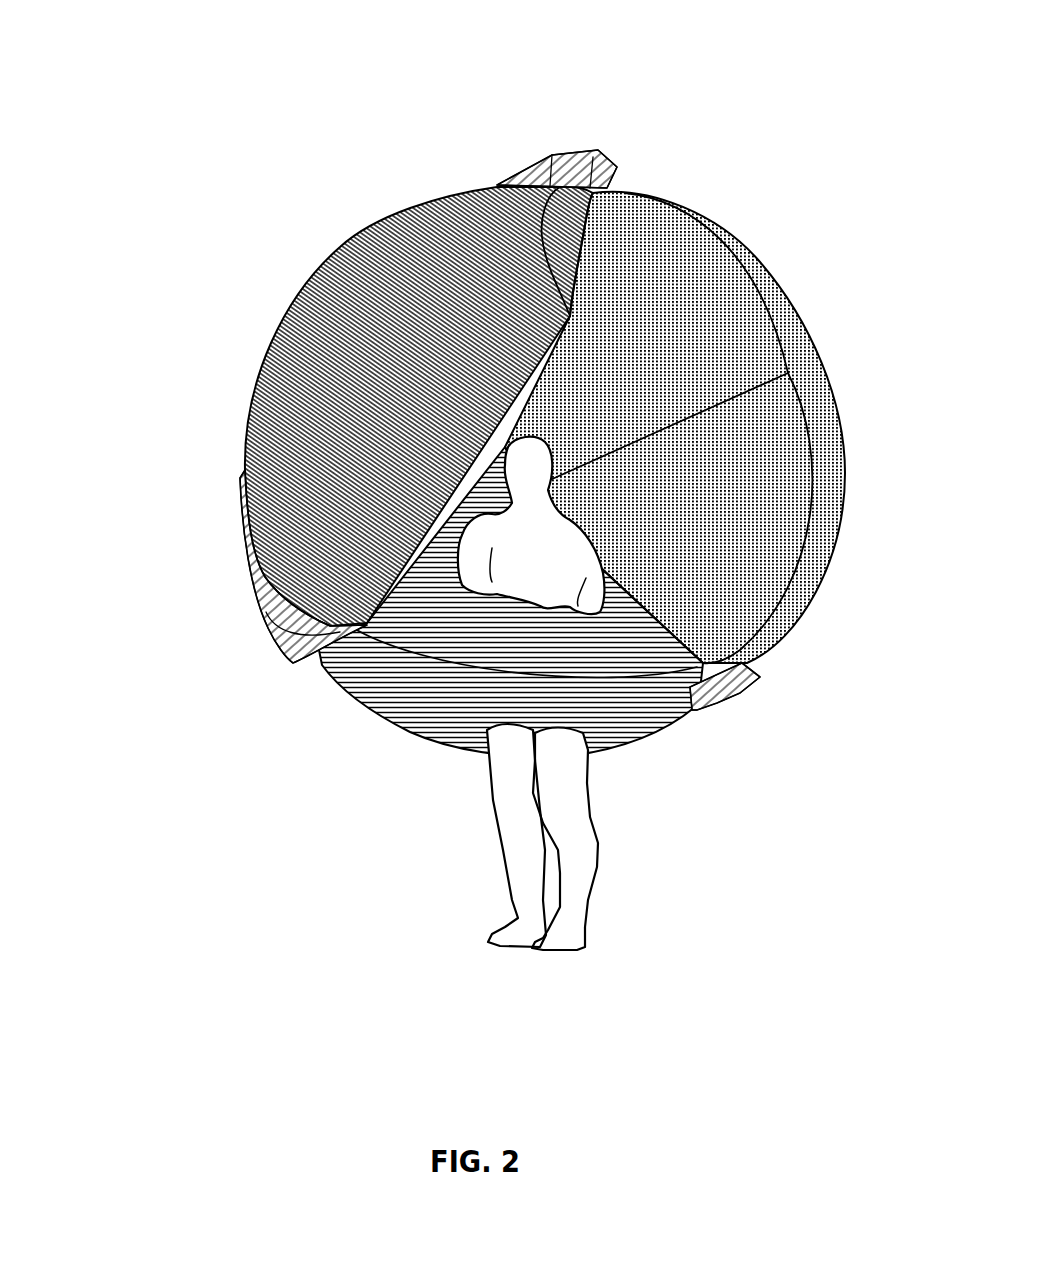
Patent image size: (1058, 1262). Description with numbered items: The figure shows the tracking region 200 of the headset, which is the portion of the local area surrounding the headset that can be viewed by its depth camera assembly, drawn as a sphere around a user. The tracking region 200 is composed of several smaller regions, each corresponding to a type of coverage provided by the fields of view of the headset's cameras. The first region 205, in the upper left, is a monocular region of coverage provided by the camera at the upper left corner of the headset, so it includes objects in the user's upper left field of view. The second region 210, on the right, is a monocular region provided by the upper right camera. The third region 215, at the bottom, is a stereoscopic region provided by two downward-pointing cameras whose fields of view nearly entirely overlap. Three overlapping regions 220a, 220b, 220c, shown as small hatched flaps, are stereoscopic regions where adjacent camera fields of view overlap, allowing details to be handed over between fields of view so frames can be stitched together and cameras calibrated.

The tracking region 200 is at (177, 52).
The first region 205 is at (355, 320).
The second region 210 is at (695, 292).
The third region 215 is at (420, 698).
The overlapping region 220a is at (572, 150).
The overlapping region 220b is at (237, 525).
The overlapping region 220c is at (844, 737).